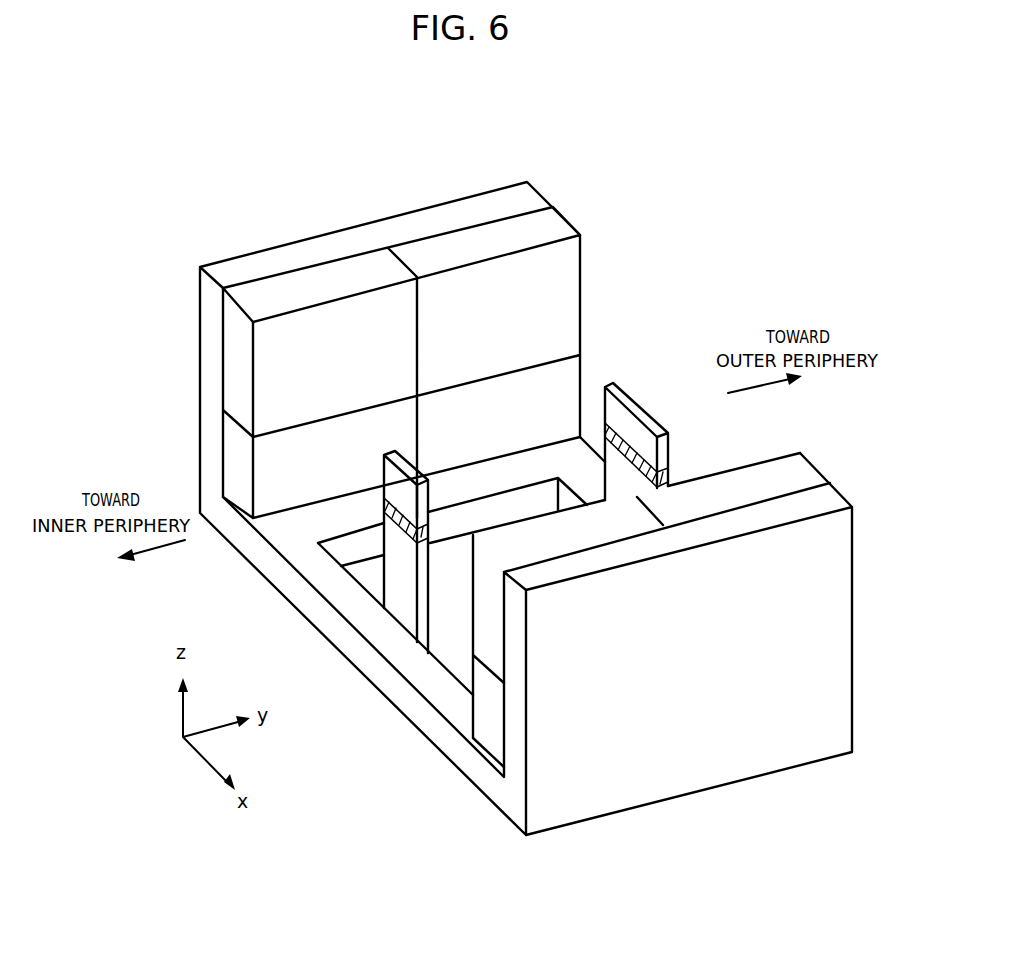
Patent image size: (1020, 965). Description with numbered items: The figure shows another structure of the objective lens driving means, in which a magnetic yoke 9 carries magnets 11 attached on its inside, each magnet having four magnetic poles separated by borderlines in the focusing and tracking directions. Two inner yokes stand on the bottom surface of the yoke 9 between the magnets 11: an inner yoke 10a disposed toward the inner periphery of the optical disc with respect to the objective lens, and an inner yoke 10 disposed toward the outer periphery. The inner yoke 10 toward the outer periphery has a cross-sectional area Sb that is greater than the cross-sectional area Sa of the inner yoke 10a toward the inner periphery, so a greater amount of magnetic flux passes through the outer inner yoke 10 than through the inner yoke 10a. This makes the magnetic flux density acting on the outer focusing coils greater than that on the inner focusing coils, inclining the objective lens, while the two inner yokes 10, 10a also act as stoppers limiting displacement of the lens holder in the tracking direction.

The magnetic yoke 9 is at (808, 587).
The magnets 11 is at (290, 298).
The inner yoke 10 is at (650, 394).
The inner yoke 10a is at (308, 601).
The cross-sectional area Sa is at (384, 516).
The cross-sectional area Sb is at (653, 422).